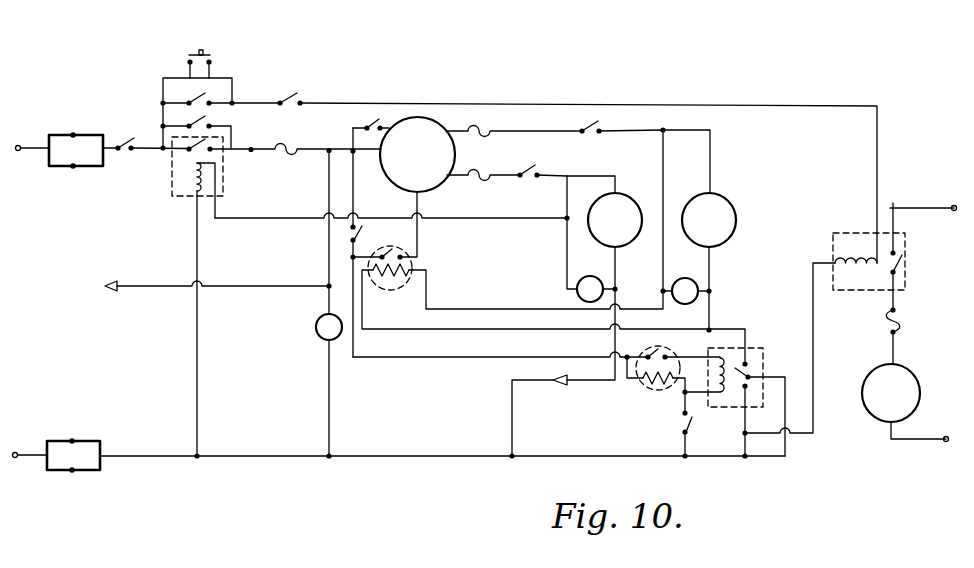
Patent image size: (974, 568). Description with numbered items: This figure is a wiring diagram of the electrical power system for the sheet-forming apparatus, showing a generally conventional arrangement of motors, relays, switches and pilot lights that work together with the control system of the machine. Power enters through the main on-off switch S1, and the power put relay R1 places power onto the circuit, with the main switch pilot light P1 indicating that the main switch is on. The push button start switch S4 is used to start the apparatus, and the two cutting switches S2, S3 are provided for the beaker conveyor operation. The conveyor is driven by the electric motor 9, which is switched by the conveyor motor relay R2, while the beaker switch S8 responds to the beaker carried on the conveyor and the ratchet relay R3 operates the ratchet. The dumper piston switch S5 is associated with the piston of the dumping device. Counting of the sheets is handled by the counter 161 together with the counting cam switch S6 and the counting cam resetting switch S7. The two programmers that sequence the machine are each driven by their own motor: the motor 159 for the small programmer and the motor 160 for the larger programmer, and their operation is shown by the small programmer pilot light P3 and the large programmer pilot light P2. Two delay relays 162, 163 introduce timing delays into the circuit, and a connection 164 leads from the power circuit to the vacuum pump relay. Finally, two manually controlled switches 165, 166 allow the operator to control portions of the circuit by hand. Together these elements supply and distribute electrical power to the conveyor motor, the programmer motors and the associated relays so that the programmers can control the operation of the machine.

The main on-off switch S1 is at (123, 139).
The cutting switch for beaker conveyor operation S2 is at (192, 119).
The cutting switch for beaker conveyor operation S3 is at (193, 95).
The push button start switch S4 is at (199, 56).
The dumper piston switch S5 is at (285, 94).
The counting cam switch S6 is at (371, 121).
The counting cam resetting switch S7 is at (367, 236).
The beaker switch S8 is at (699, 423).
The power put relay R1 is at (197, 296).
The conveyor motor relay R2 is at (869, 261).
The ratchet relay R3 is at (746, 377).
The main switch pilot light P1 is at (322, 319).
The large programmer pilot light P2 is at (590, 281).
The small programmer pilot light P3 is at (685, 282).
The electric motor 9 is at (877, 377).
The motor for the small programmer 159 is at (718, 208).
The motor for the larger programmer 160 is at (620, 207).
The counter 161 is at (412, 175).
The delay relay 162 is at (443, 242).
The delay relay 163 is at (652, 409).
The connection to a vacuum pump relay 164 is at (173, 286).
The manually controlled switch 165 is at (574, 123).
The manually controlled switch 166 is at (523, 165).